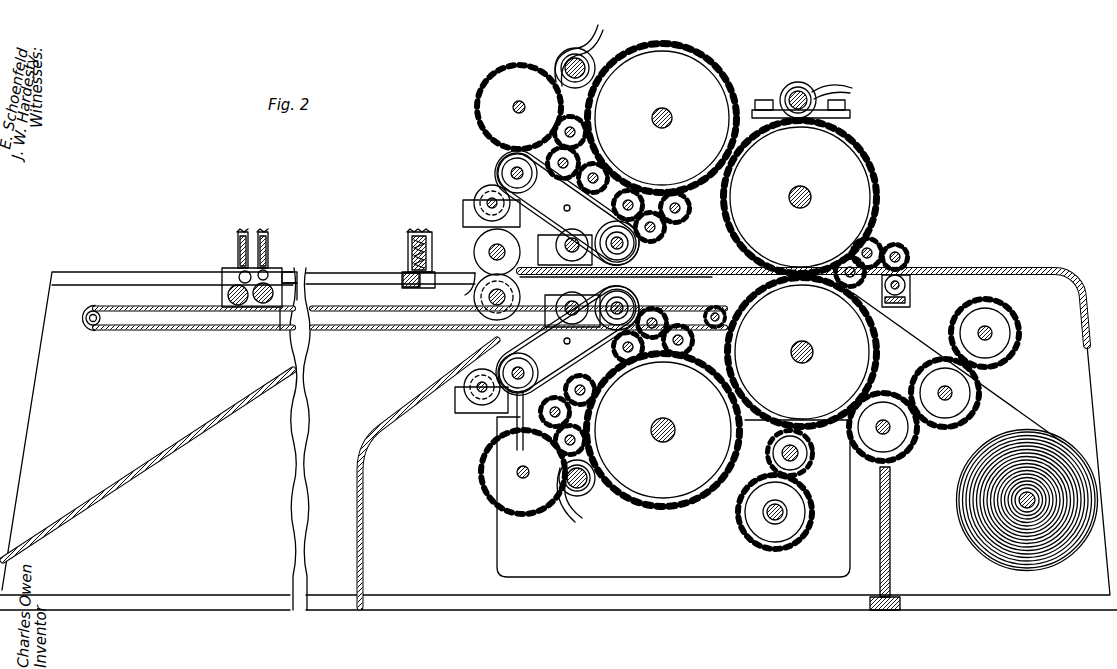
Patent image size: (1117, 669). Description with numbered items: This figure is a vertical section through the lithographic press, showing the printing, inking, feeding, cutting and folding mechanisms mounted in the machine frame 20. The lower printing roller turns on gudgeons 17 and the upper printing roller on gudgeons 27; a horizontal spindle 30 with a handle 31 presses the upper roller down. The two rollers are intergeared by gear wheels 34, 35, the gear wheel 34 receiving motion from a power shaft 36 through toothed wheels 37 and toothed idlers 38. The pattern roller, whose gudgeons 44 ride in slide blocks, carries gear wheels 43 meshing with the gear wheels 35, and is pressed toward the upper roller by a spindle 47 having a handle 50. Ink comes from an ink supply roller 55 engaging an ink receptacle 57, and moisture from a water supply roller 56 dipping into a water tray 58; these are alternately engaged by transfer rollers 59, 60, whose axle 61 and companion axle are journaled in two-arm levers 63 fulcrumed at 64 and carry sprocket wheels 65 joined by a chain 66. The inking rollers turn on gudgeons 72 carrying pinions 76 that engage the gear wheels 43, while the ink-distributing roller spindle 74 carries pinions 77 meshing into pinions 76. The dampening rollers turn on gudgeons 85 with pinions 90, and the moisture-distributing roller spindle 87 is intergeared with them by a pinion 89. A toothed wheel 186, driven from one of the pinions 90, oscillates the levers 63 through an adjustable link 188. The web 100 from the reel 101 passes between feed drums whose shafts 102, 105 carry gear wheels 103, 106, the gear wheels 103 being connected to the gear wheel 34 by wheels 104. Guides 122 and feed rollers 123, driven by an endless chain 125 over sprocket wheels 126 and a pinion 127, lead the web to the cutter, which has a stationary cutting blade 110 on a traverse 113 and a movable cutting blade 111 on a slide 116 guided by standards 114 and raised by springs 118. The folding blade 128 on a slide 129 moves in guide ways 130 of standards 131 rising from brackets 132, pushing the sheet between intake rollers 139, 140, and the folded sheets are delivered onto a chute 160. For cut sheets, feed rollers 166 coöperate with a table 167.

The gudgeons 17 is at (820, 352).
The machine frame 20 is at (603, 612).
The gudgeons 27 is at (817, 197).
The horizontal spindle 30 is at (816, 83).
The handle 31 is at (853, 89).
The gear wheel 34 is at (882, 344).
The gear wheel 35 is at (880, 176).
The power shaft 36 is at (769, 518).
The toothed wheels 37 is at (802, 540).
The toothed idlers 38 is at (806, 470).
The gear wheels 43 is at (664, 285).
The gudgeons 44 is at (668, 110).
The spindle 47 is at (581, 279).
The handle 50 is at (598, 27).
The ink supply roller 55 is at (612, 304).
The water supply roller 56 is at (478, 192).
The ink receptacle 57 is at (563, 303).
The water tray 58 is at (460, 422).
The ink transfer roller 59 is at (632, 252).
The moisture transfer roller 60 is at (497, 168).
The axle 61 is at (563, 241).
The two-arm levers 63 is at (520, 340).
The fulcrum 64 is at (599, 358).
The sprocket wheels 65 is at (585, 373).
The chain 66 is at (500, 160).
The gudgeons 72 is at (662, 200).
The spindle 74 is at (656, 215).
The pinions 76 is at (648, 200).
The pinions 77 is at (688, 268).
The gudgeons 85 is at (588, 130).
The spindle 87 is at (624, 188).
The pinion 89 is at (548, 155).
The pinions 90 is at (560, 120).
The web 100 is at (1030, 405).
The reel 101 is at (1025, 502).
The shaft 102 is at (952, 398).
The gear wheels 103 is at (909, 427).
The wheels 104 is at (900, 536).
The shaft 105 is at (995, 334).
The gear wheels 106 is at (1009, 333).
The stationary cutting blade 110 is at (395, 258).
The movable cutting blade 111 is at (412, 243).
The traverse 113 is at (402, 282).
The standards 114 is at (408, 236).
The slide 116 is at (476, 244).
The springs 118 is at (412, 258).
The guides 122 is at (630, 266).
The feed rollers 123 is at (474, 283).
The endless chain 125 is at (404, 322).
The sprocket wheels 126 is at (100, 314).
The pinion 127 is at (730, 291).
The folding blade 128 is at (243, 272).
The slide 129 is at (238, 238).
The guide ways 130 is at (268, 272).
The standards 131 is at (270, 240).
The brackets 132 is at (280, 330).
The intake roller 139 is at (312, 277).
The intake roller 140 is at (252, 260).
The chute 160 is at (178, 440).
The feed rollers 166 is at (912, 268).
The table 167 is at (975, 268).
The toothed wheel 186 is at (488, 277).
The adjustable link 188 is at (516, 145).